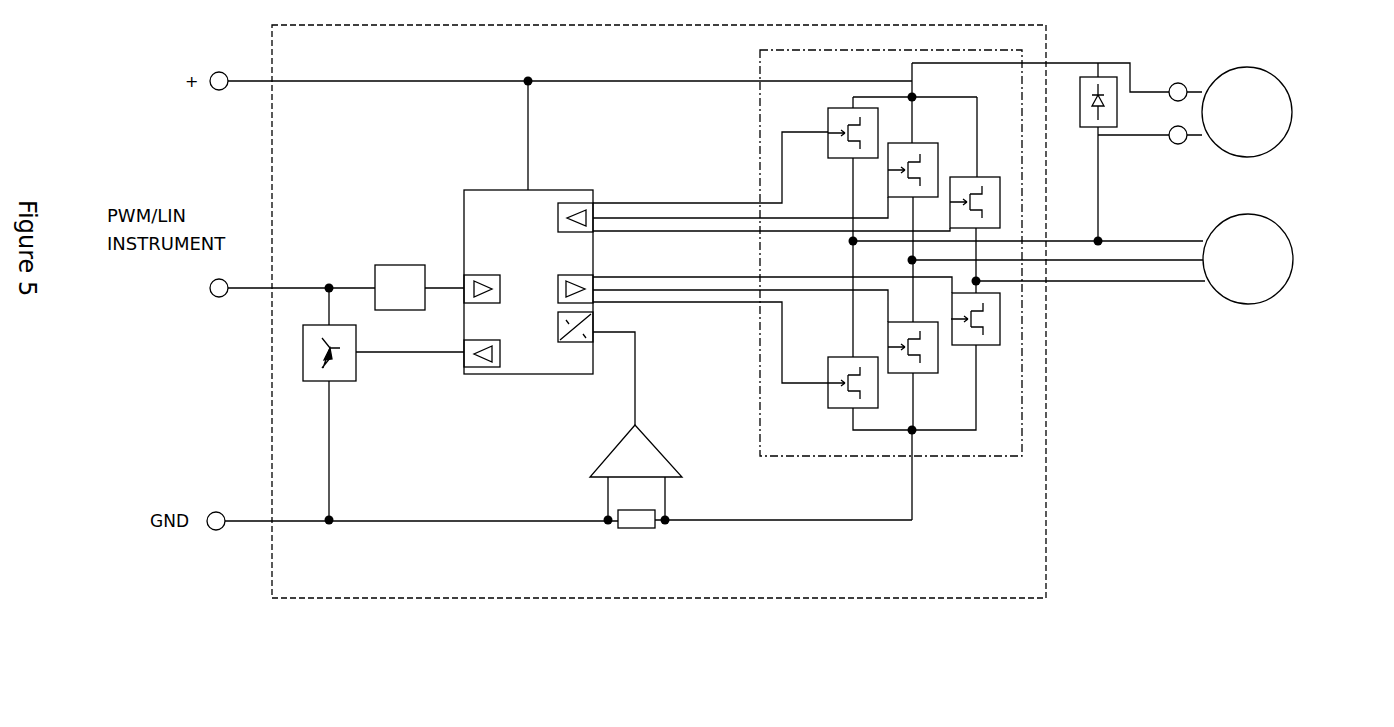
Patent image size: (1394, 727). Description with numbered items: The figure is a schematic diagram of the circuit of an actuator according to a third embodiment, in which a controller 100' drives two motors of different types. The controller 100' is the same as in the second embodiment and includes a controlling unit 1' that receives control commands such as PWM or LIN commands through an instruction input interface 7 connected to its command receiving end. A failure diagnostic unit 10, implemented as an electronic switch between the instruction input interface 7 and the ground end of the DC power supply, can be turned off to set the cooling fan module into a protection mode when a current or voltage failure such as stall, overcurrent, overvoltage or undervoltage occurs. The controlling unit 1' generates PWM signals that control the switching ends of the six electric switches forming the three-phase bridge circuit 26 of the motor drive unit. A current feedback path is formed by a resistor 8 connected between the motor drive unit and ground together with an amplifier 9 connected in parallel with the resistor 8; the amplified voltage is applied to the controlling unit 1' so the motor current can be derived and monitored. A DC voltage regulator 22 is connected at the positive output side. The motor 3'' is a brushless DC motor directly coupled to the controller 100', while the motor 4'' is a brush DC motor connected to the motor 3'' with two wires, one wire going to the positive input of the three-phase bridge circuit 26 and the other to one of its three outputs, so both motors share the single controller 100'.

The controller 100' is at (659, 351).
The controlling unit 1' is at (532, 302).
The instruction input interface 7 is at (400, 265).
The resistor 8 is at (633, 528).
The amplifier 9 is at (612, 447).
The failure diagnostic unit 10 is at (356, 383).
The DC voltage regulator 22 is at (1088, 128).
The three-phase bridge circuit 26 is at (938, 458).
The motor 3'' is at (1292, 275).
The motor 4'' is at (1289, 127).